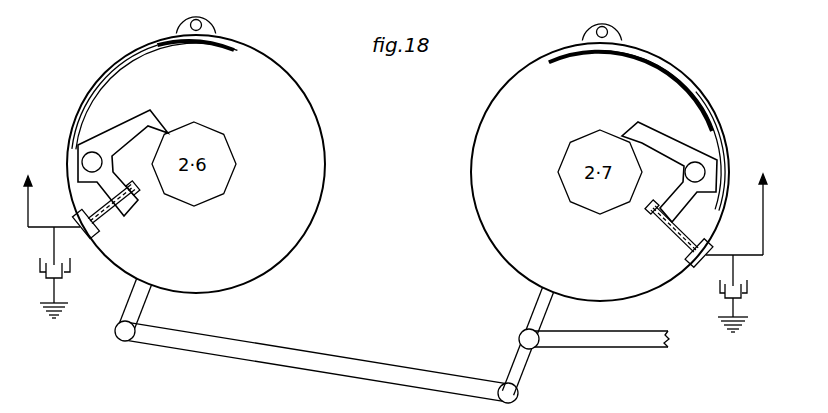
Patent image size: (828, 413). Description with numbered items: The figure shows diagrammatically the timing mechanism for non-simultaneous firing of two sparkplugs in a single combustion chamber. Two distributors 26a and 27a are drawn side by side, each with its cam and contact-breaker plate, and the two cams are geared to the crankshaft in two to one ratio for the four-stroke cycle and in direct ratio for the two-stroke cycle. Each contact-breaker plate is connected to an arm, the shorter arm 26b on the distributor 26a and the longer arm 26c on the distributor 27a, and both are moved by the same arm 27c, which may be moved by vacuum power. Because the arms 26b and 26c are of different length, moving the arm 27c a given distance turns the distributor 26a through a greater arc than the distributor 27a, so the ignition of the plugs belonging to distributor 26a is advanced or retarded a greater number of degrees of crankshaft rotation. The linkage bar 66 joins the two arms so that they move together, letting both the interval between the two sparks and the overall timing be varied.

The distributor 26a is at (306, 96).
The distributor 27a is at (487, 100).
The arm 26b is at (143, 305).
The arm 26c is at (530, 308).
The arm 27c is at (609, 347).
The connecting bar 66 is at (316, 367).